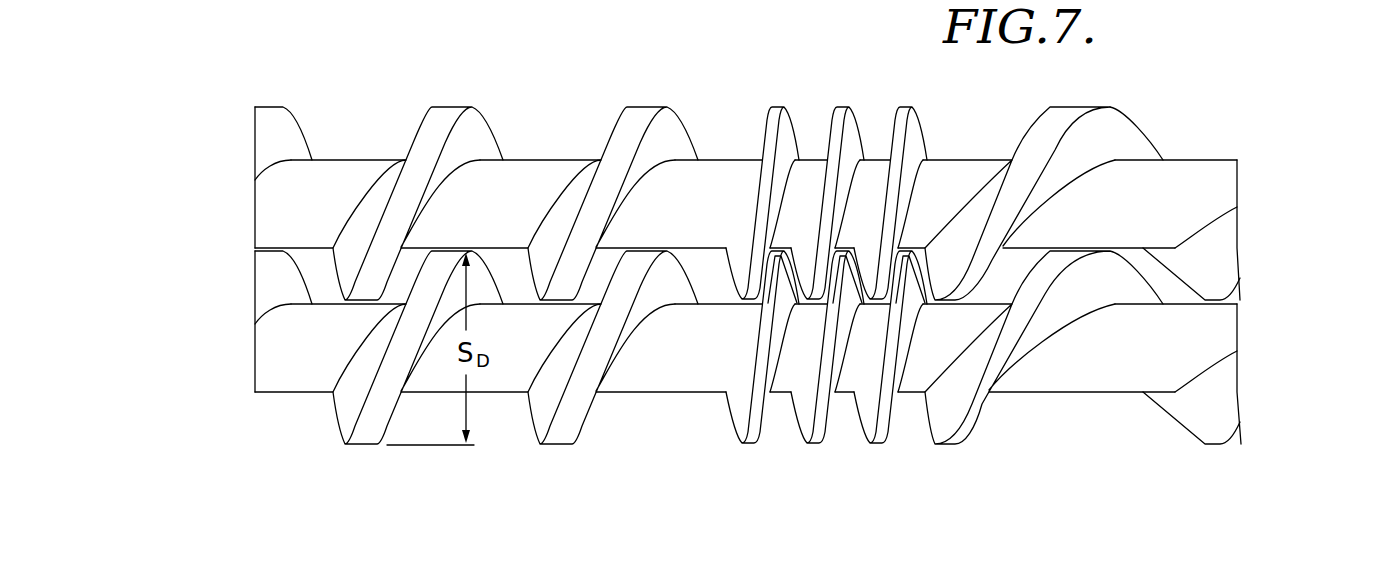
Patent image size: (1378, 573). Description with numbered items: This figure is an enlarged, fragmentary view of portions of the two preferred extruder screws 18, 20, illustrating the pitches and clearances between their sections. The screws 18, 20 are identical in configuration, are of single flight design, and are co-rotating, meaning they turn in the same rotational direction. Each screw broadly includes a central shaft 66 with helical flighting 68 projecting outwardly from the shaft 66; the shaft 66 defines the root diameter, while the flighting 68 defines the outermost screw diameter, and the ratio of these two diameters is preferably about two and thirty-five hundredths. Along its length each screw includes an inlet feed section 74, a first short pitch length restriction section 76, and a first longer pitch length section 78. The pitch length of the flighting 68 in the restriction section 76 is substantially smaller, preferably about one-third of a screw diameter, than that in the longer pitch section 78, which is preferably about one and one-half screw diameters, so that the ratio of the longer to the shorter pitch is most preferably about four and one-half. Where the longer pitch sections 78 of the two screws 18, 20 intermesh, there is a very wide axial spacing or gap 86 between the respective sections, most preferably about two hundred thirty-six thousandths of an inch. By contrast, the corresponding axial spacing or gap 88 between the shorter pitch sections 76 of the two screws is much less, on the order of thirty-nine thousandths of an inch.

The extruder screw 18 is at (766, 347).
The extruder screw 20 is at (785, 181).
The central shaft 66 is at (719, 167).
The helical flighting 68 is at (1041, 133).
The inlet feed section 74 is at (1133, 139).
The first short pitch length restriction section 76 is at (850, 124).
The first longer pitch length section 78 is at (540, 167).
The axial spacing or gap 86 is at (302, 273).
The axial spacing or gap 88 is at (863, 255).